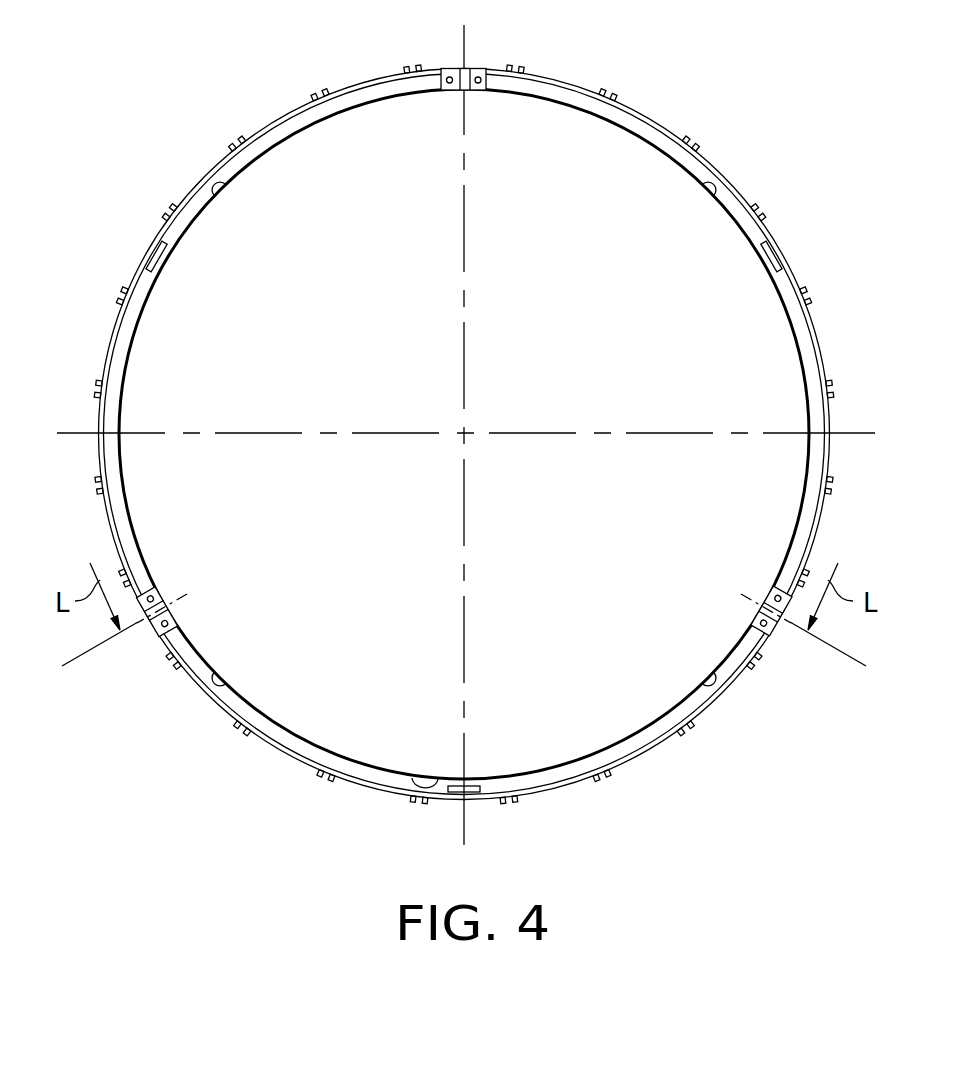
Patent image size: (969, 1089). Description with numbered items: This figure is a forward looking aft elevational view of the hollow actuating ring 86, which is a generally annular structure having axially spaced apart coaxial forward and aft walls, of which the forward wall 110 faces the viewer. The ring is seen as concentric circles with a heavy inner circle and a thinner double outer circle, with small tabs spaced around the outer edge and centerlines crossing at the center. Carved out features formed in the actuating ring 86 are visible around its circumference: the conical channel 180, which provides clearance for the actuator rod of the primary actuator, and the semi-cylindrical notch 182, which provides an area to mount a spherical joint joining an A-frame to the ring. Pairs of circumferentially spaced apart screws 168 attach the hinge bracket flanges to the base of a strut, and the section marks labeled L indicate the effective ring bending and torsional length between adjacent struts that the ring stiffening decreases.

The forward wall 110 is at (358, 100).
The actuating ring 86 is at (265, 155).
The conical channel 180 is at (218, 188).
The semi-cylindrical notch 182 is at (478, 782).
The screws 168 is at (481, 90).